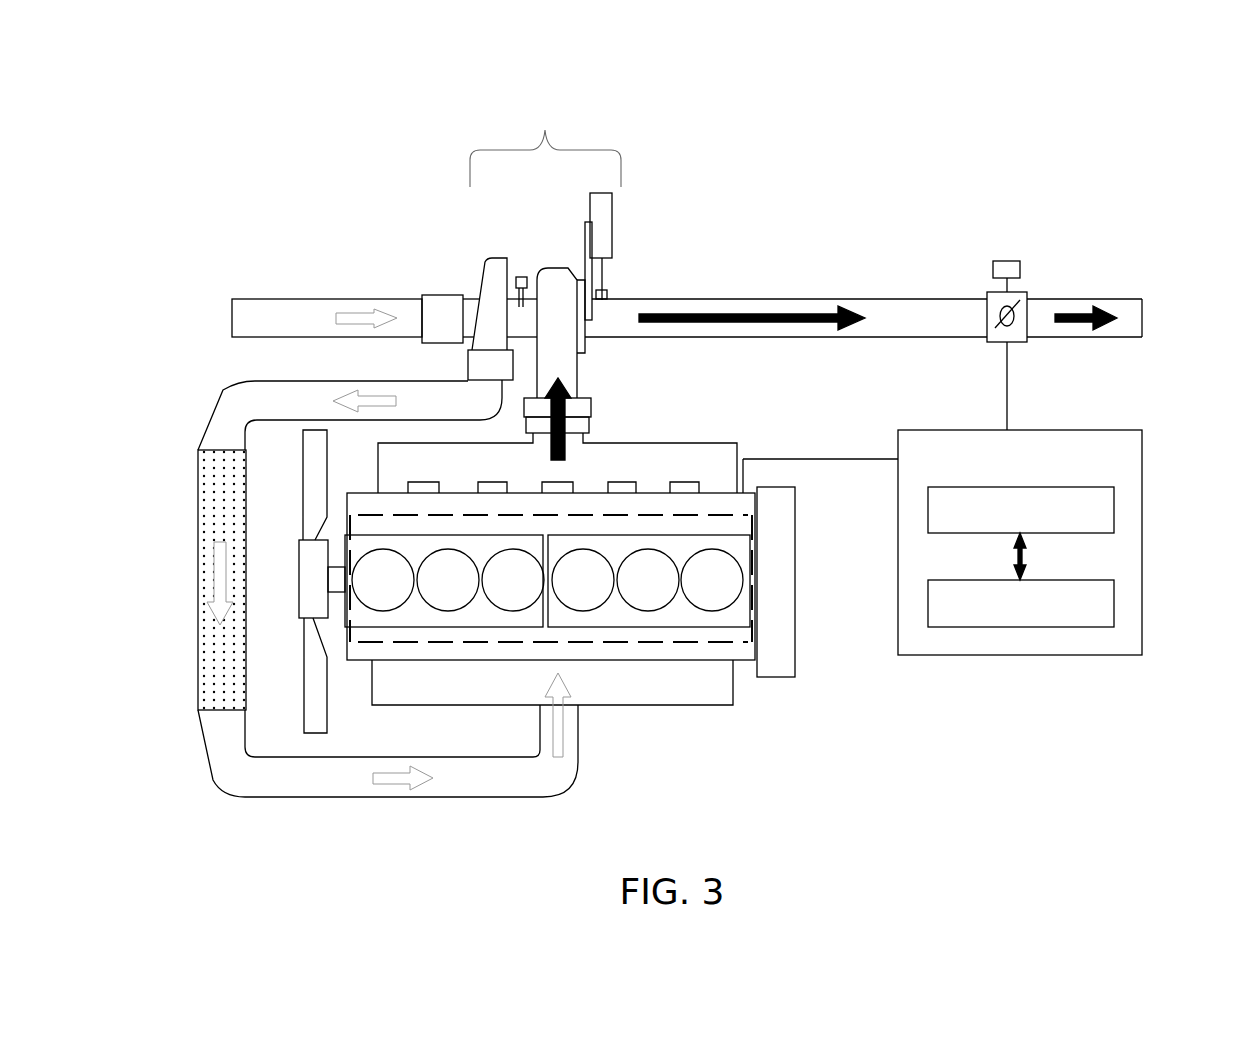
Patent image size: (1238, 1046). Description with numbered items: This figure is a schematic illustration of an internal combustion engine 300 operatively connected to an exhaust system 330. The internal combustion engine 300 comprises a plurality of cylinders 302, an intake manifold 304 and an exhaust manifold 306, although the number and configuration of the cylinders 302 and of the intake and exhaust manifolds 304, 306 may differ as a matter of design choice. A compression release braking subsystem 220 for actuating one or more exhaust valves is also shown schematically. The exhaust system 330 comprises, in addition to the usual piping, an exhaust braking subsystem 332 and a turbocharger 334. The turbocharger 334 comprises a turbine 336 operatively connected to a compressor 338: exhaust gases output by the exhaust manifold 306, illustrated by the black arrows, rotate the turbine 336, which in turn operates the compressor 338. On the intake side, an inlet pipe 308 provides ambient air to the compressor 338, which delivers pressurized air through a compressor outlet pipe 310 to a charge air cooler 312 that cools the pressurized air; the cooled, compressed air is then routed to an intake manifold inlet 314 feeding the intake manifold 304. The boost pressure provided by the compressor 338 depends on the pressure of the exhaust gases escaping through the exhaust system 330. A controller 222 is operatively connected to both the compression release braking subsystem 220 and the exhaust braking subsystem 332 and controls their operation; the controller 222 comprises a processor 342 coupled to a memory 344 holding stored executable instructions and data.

The internal combustion engine 300 is at (603, 569).
The cylinders 302 is at (505, 612).
The intake manifold 304 is at (655, 705).
The exhaust manifold 306 is at (655, 442).
The inlet pipe 308 is at (318, 299).
The compressor outlet pipe 310 is at (223, 389).
The charge air cooler 312 is at (198, 545).
The intake manifold inlet 314 is at (227, 795).
The exhaust system 330 is at (848, 262).
The exhaust braking subsystem 332 is at (1032, 290).
The turbocharger 334 is at (545, 197).
The turbine 336 is at (572, 269).
The compressor 338 is at (485, 260).
The processor 342 is at (1114, 506).
The memory 344 is at (1114, 600).
The compression release braking subsystem 220 is at (702, 642).
The controller 222 is at (971, 568).